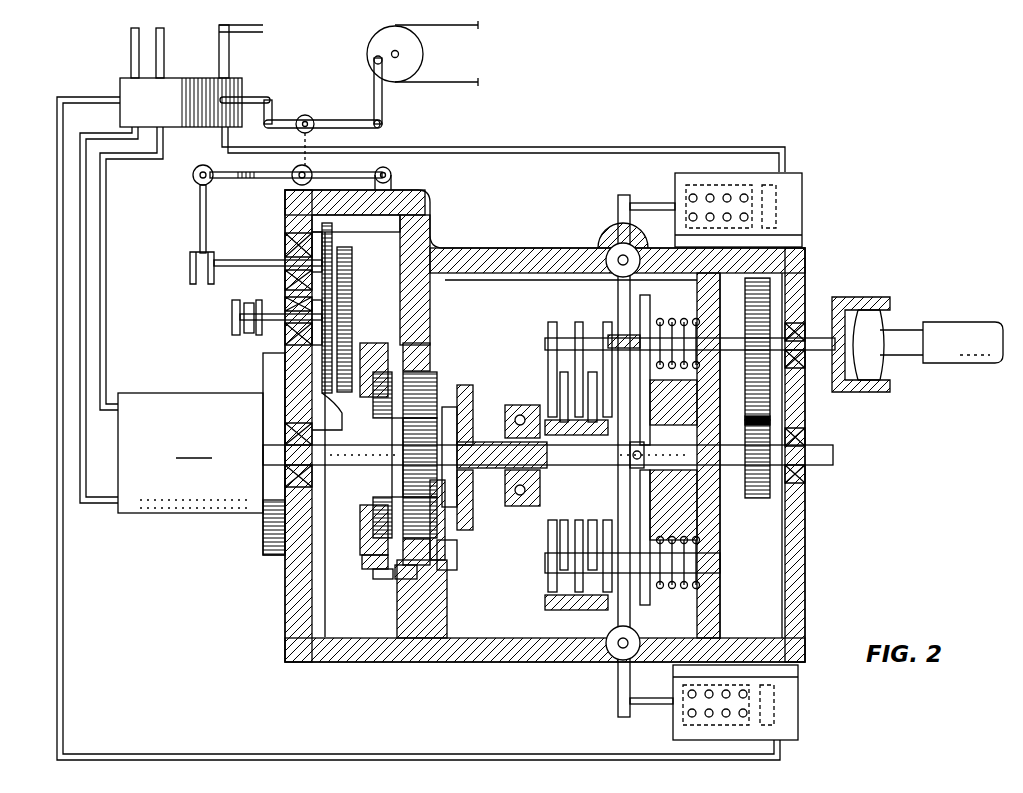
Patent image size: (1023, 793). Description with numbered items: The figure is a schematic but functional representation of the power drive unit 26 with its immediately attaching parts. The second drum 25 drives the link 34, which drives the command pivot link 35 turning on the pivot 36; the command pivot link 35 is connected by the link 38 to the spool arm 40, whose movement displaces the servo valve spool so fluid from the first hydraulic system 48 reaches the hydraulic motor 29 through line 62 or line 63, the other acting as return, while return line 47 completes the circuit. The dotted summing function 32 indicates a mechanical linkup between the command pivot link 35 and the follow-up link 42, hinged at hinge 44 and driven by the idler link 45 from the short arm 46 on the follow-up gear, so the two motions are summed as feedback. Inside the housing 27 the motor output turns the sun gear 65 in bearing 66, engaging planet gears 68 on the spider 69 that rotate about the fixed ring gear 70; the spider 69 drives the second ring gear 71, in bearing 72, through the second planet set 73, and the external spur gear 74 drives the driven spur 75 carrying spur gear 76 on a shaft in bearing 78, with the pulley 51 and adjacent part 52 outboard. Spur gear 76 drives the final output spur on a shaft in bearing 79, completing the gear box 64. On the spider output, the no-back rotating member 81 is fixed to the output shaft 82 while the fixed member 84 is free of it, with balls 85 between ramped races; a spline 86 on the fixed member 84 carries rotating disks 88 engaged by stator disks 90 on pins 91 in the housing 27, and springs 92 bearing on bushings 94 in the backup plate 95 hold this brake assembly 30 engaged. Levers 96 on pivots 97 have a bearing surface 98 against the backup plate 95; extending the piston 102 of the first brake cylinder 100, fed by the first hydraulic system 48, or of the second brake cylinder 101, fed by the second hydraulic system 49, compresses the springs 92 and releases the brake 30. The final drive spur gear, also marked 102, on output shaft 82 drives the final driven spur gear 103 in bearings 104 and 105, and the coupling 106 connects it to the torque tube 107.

The second drum 25 is at (367, 48).
The power drive unit 26 is at (268, 584).
The housing 27 is at (466, 248).
The hydraulic motor 29 is at (190, 453).
The brake assembly 30 is at (573, 596).
The summing function 32 is at (314, 166).
The link 34 is at (382, 111).
The command pivot link 35 is at (370, 122).
The pivot 36 is at (306, 122).
The link 38 is at (302, 120).
The spool arm 40 is at (268, 98).
The follow-up link 42 is at (254, 176).
The hinge 44 is at (392, 174).
The idler link 45 is at (198, 216).
The short arm 46 is at (192, 282).
The return line 47 is at (166, 58).
The first hydraulic system 48 is at (219, 64).
The second hydraulic system 49 is at (130, 51).
The pulley 51 is at (230, 324).
The brake disc 52 is at (232, 302).
The line 62 is at (80, 416).
The line 63 is at (106, 360).
The gear box 64 is at (454, 574).
The sun gear 65 is at (456, 430).
The bearing 66 is at (260, 523).
The planet gears 68 is at (438, 378).
The planet spider 69 is at (470, 416).
The fixed ring gear 70 is at (430, 360).
The second ring gear 71 is at (402, 578).
The bearing 72 is at (348, 516).
The second planet set 73 is at (380, 570).
The external spur gear 74 is at (372, 566).
The driven spur 75 is at (360, 302).
The spur gear 76 is at (308, 356).
The bearing 78 is at (286, 233).
The bearing 79 is at (286, 280).
The rotating member 81 is at (490, 482).
The output shaft 82 is at (548, 453).
The fixed member 84 is at (540, 516).
The balls 85 is at (512, 506).
The spline 86 is at (556, 388).
The rotating disks 88 is at (566, 376).
The stator disks 90 is at (602, 320).
The pins 91 is at (562, 326).
The springs 92 is at (700, 390).
The bushings 94 is at (652, 378).
The backup plate 95 is at (650, 480).
The levers 96 is at (606, 244).
The pivot 97 is at (600, 224).
The bearing surface 98 is at (652, 440).
The first brake cylinder 100 is at (785, 162).
The second brake cylinder 101 is at (780, 754).
The piston 102 is at (660, 198).
The final driven spur gear 103 is at (790, 386).
The bearing 104 is at (805, 434).
The bearing 105 is at (812, 292).
The coupling 106 is at (884, 306).
The torque tube 107 is at (948, 320).